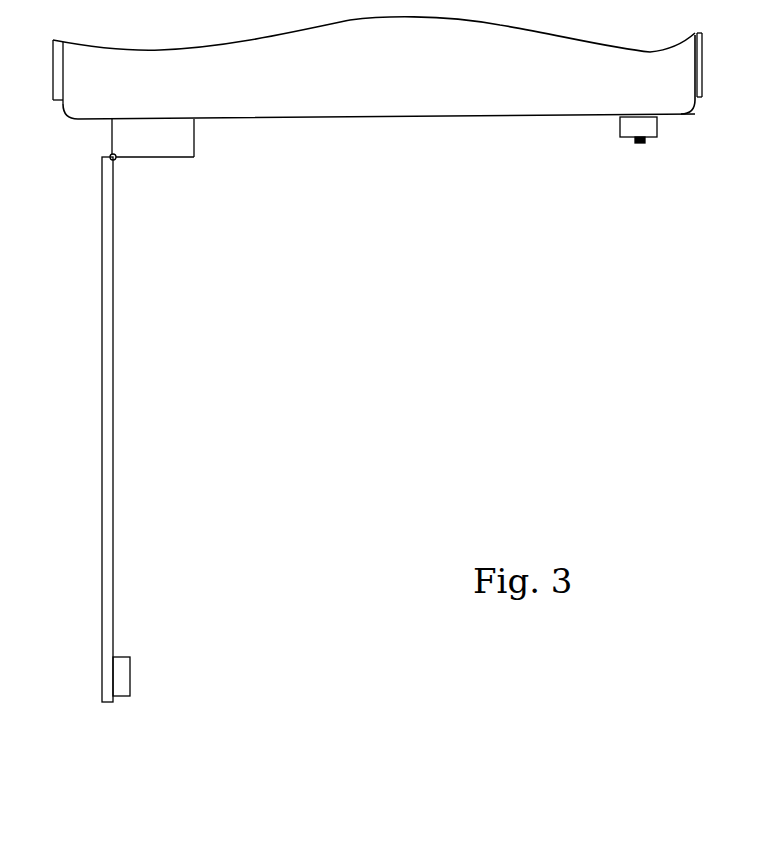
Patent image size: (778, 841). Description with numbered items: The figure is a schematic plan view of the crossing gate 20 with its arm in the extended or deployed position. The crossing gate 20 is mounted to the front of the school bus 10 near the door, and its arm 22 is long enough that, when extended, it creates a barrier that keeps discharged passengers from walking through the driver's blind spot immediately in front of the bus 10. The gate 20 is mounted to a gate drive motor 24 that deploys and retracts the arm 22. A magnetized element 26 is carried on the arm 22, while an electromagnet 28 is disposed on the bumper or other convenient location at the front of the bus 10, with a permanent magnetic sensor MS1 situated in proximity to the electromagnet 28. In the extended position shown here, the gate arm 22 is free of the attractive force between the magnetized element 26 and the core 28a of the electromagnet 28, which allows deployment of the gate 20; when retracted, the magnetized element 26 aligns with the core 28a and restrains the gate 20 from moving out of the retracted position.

The school bus 10 is at (393, 89).
The crossing gate 20 is at (136, 197).
The arm 22 is at (110, 362).
The gate drive motor 24 is at (162, 153).
The magnetized element 26 is at (132, 670).
The electromagnet 28 is at (616, 125).
The core 28a is at (627, 138).
The permanent magnetic sensor MS1 is at (657, 140).